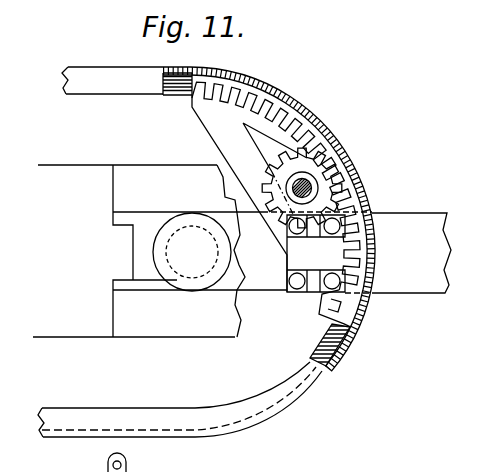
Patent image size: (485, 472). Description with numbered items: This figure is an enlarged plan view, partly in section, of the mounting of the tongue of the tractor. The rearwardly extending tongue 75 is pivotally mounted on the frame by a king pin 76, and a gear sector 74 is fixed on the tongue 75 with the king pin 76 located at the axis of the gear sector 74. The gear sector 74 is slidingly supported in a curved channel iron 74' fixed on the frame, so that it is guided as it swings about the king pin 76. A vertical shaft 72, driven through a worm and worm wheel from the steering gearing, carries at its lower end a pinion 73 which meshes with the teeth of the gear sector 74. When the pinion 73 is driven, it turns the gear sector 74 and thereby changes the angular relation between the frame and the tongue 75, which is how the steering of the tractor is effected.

The vertical shaft 72 is at (318, 172).
The pinion 73 is at (322, 188).
The gear sector 74 is at (281, 219).
The curved channel iron 74' is at (307, 219).
The tongue 75 is at (268, 292).
The king pin 76 is at (192, 252).